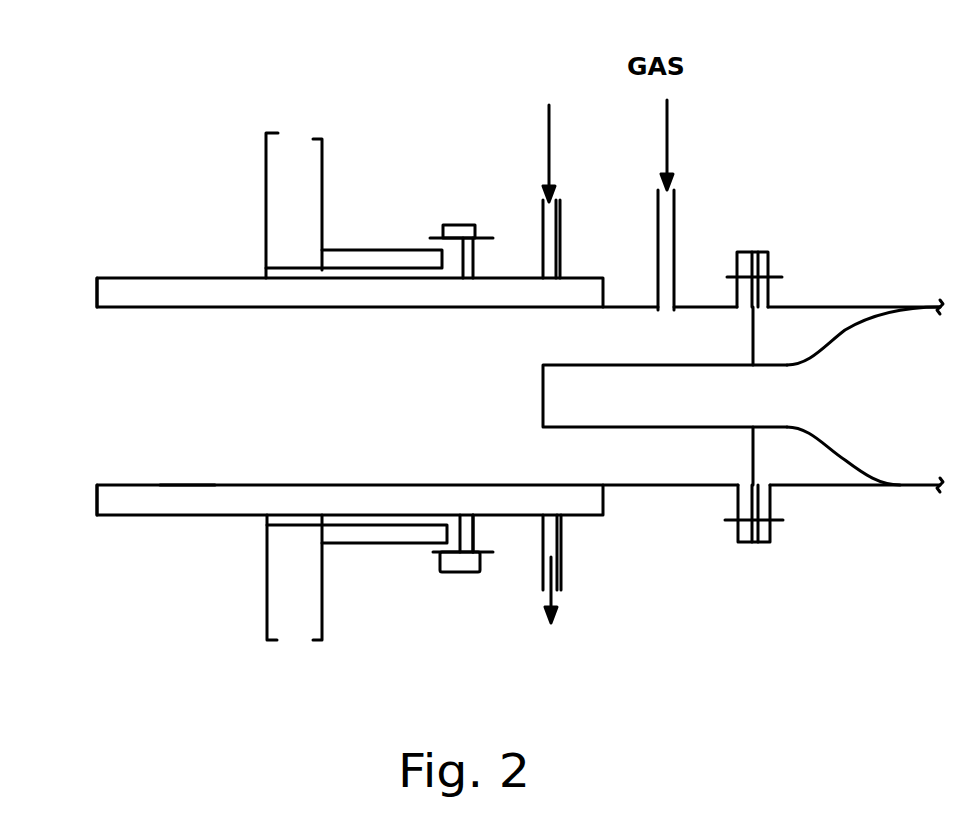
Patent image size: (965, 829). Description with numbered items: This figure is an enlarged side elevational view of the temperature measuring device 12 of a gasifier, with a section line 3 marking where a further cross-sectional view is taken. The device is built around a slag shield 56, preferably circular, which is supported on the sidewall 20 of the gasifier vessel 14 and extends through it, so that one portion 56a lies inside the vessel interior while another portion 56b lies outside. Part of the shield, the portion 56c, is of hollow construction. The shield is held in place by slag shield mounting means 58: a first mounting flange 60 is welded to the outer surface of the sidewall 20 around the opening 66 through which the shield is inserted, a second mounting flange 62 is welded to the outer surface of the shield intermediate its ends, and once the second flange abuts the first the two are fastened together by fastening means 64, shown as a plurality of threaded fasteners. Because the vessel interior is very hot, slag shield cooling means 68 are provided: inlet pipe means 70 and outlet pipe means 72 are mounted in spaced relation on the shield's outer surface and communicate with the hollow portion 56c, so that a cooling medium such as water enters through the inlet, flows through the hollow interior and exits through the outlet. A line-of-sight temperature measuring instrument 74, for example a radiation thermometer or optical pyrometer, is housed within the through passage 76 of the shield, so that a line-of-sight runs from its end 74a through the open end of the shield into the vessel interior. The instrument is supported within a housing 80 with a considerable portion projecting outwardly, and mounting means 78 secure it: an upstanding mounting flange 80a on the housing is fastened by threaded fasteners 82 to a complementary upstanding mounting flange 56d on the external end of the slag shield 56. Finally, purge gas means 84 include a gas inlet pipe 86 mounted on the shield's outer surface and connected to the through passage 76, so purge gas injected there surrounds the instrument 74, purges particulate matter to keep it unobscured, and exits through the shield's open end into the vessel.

The section line 3- 3 is at (114, 419).
The temperature measuring device 12 is at (578, 258).
The gasifier vessel 14 is at (336, 631).
The sidewall 20 is at (262, 603).
The slag shield 56 is at (168, 277).
The portion of slag shield 56a is at (115, 515).
The portion of slag shield 56b is at (596, 516).
The hollow portion of slag shield 56c is at (188, 507).
The complementary upstanding mounting flange 56d is at (737, 258).
The slag shield mounting means 58 is at (444, 208).
The first mounting flange 60 is at (452, 573).
The second mounting flange 62 is at (470, 573).
The fastening means 64 is at (493, 236).
The opening 66 is at (247, 563).
The slag shield cooling means 68 is at (578, 587).
The inlet pipe means 70 is at (542, 258).
The outlet pipe means 72 is at (565, 568).
The temperature measuring instrument 74 is at (705, 445).
The end of temperature measuring instrument 74a is at (543, 394).
The through passage 76 is at (108, 308).
The mounting means 78 is at (776, 234).
The housing 80 is at (858, 307).
The upstanding mounting flange 80a is at (773, 542).
The threaded fasteners 82 is at (782, 270).
The purge gas means 84 is at (692, 192).
The gas inlet pipe 86 is at (657, 245).